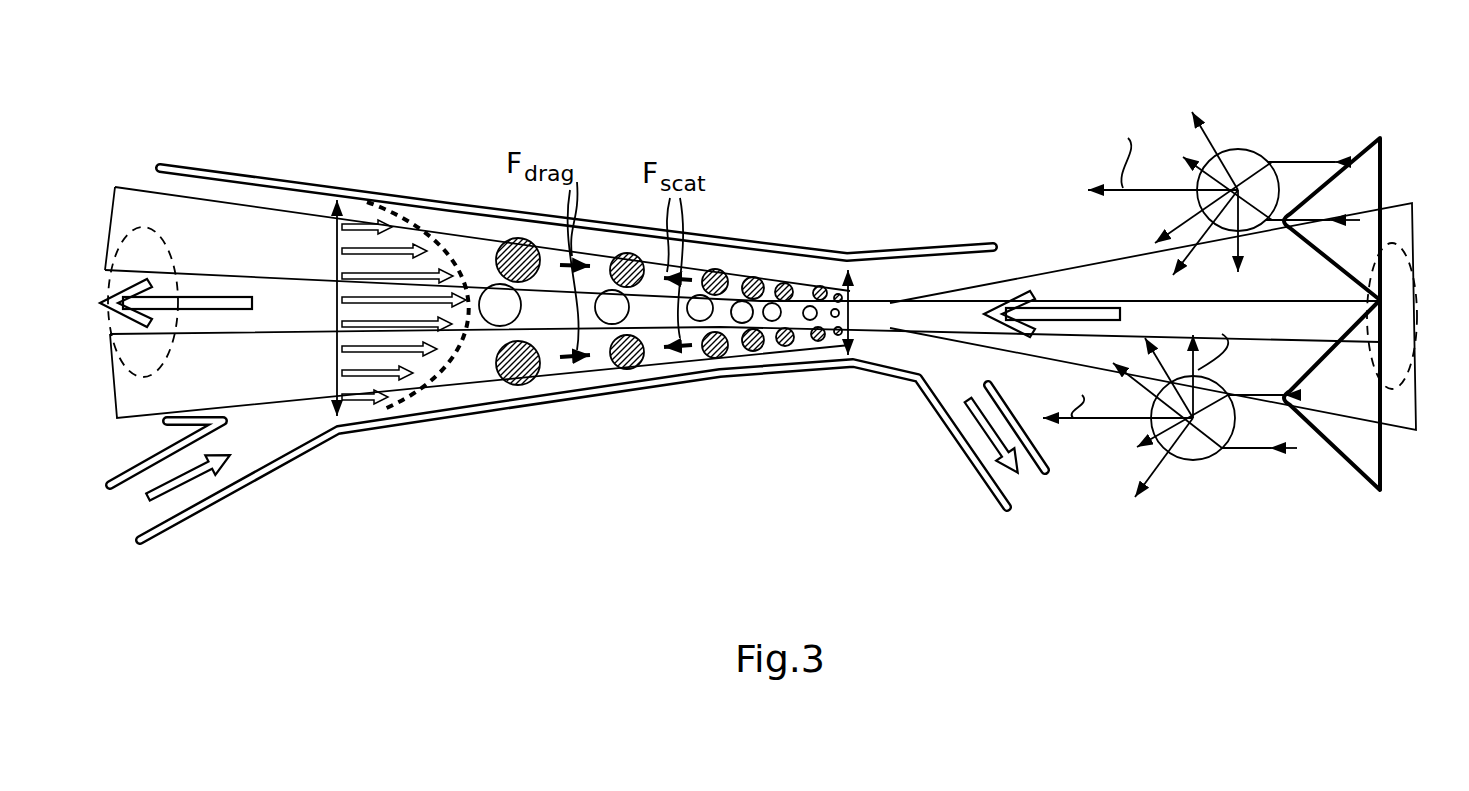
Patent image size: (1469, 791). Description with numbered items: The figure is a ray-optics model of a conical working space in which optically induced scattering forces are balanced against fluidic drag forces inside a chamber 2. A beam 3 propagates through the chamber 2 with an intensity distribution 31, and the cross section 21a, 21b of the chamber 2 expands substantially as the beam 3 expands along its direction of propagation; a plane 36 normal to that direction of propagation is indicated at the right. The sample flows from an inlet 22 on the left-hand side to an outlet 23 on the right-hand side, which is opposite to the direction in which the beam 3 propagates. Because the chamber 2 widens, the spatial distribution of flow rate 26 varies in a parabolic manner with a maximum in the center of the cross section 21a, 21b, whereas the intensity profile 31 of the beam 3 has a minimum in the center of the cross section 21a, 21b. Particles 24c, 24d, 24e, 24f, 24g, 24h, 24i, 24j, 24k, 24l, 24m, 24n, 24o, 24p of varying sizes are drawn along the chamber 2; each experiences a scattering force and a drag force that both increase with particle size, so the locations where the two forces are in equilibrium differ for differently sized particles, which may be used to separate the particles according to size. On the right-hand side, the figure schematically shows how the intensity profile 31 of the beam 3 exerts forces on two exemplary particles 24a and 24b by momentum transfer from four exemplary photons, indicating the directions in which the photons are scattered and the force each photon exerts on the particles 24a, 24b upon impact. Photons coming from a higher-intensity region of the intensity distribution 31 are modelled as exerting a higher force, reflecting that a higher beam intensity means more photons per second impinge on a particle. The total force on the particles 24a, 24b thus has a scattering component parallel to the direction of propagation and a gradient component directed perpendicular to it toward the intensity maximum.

The chamber 2 is at (847, 266).
The beam 3 is at (748, 280).
The cross section of chamber 21a is at (853, 278).
The cross section of chamber 21b is at (330, 405).
The inlet of chamber 22 is at (262, 430).
The outlet of chamber 23 is at (950, 398).
The particle 24a is at (1248, 150).
The particle 24b is at (1193, 461).
The particle 24c is at (522, 238).
The particle 24d is at (630, 253).
The particle 24e is at (717, 268).
The particle 24f is at (753, 277).
The particle 24g is at (785, 283).
The particle 24h is at (822, 286).
The particle 24i is at (843, 297).
The particle 24j is at (522, 386).
The particle 24k is at (630, 370).
The particle 24l is at (715, 359).
The particle 24m is at (753, 352).
The particle 24n is at (785, 347).
The particle 24o is at (820, 342).
The particle 24p is at (846, 340).
The spatial distribution of flow rate 26 is at (410, 393).
The intensity distribution of beam 31 is at (1367, 175).
The plane normal to direction of propagation 36 is at (1395, 205).